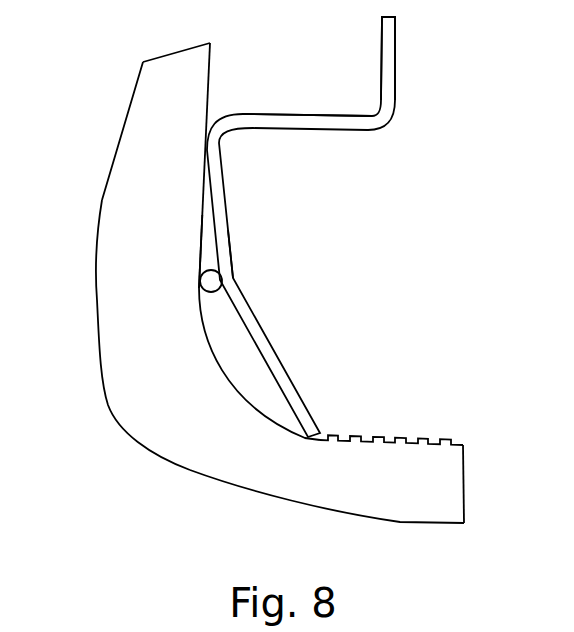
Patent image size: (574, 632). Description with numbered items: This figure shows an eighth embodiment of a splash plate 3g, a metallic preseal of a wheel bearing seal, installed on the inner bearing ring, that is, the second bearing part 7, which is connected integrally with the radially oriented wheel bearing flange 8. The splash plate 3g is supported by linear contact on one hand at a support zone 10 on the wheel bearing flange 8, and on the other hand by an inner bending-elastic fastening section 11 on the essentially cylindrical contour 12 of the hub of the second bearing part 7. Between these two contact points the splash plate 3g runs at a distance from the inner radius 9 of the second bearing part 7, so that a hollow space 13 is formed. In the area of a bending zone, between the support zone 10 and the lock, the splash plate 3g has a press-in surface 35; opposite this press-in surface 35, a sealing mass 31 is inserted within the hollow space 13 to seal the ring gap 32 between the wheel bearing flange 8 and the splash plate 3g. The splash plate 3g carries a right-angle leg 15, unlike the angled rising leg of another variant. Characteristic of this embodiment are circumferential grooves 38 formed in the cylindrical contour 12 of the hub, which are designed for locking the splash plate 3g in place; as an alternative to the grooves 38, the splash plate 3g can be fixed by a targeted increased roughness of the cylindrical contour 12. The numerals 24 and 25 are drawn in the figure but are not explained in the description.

The splash plate 3g is at (398, 106).
The second bearing part 7 is at (437, 510).
The wheel bearing flange 8 is at (140, 100).
The inner radius 9 is at (217, 369).
The support zone 10 is at (203, 157).
The fastening section 11 is at (228, 232).
The cylindrical contour 12 is at (462, 447).
The hollow space 13 is at (205, 325).
The leg 15 is at (341, 115).
The bent section 24 is at (284, 96).
The retaining post 25 is at (394, 72).
The sealing mass 31 is at (203, 281).
The ring gap 32 is at (202, 217).
The press-in surface 35 is at (232, 273).
The circumferential grooves 38 is at (415, 440).